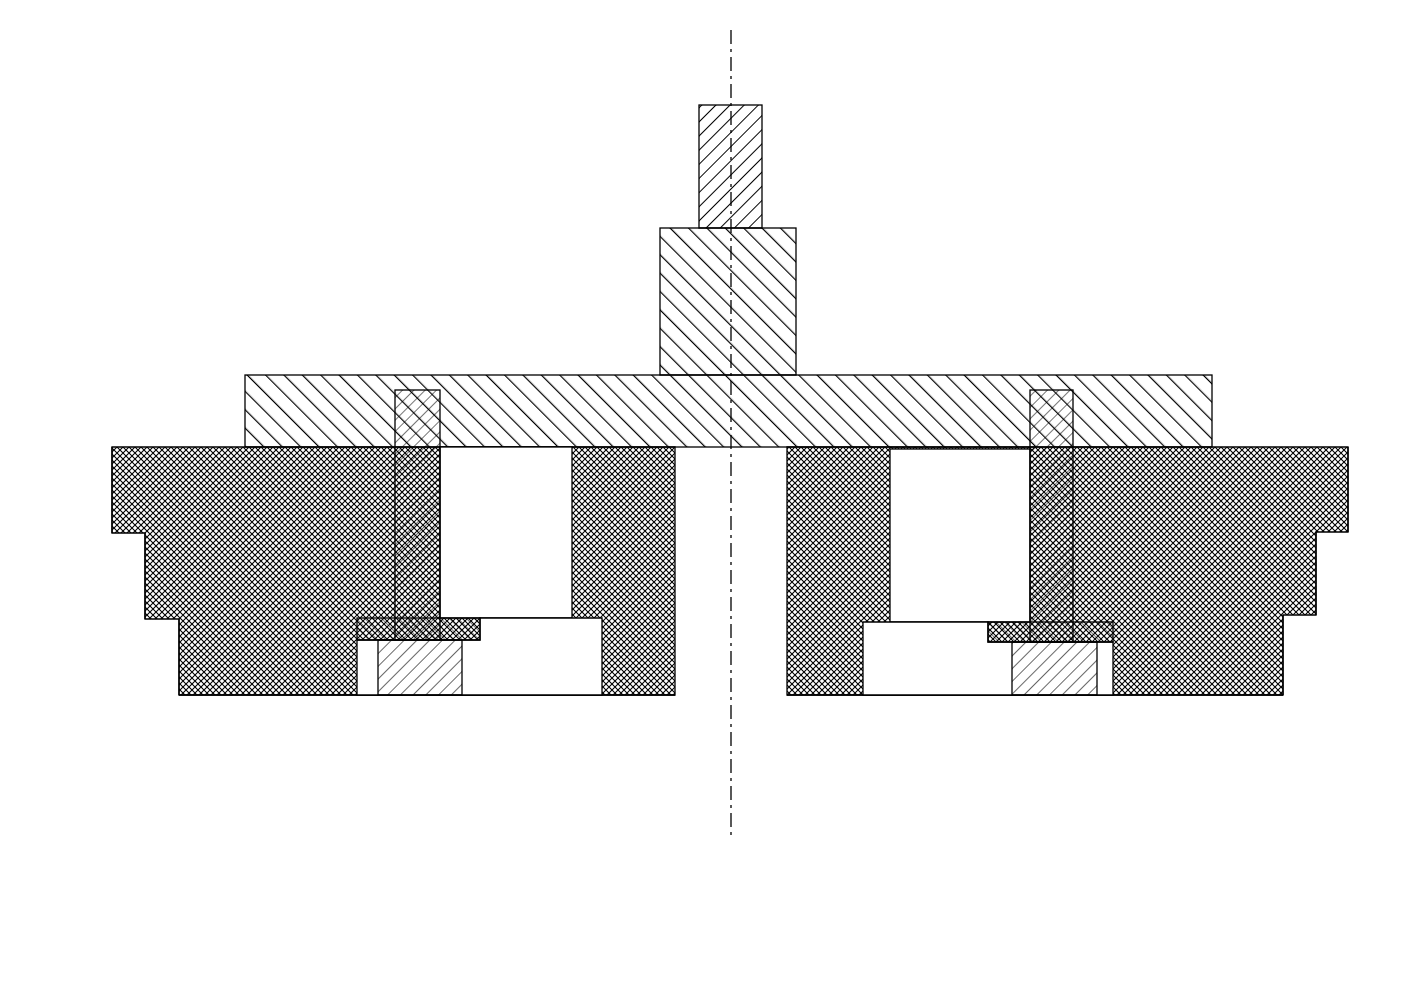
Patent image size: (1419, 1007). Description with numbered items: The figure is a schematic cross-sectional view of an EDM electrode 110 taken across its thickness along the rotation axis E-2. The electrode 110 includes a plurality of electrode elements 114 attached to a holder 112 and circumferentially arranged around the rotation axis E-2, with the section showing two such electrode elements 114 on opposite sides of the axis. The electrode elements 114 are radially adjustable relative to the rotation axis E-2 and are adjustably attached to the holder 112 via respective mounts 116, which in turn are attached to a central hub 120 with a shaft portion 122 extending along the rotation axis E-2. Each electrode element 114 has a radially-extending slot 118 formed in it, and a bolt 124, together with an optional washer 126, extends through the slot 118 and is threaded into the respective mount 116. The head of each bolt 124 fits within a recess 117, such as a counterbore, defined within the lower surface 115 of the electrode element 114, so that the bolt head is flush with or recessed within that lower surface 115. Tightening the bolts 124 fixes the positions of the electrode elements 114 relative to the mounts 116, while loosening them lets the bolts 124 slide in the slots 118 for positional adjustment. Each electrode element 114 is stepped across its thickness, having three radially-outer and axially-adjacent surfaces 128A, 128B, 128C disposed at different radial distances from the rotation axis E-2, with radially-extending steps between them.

The electrode 110 is at (253, 78).
The holder 112 is at (563, 278).
The electrode elements 114 is at (264, 571).
The lower surfaces 115 is at (297, 697).
The mounts 116 is at (363, 375).
The recesses 117 is at (540, 653).
The radially-extending slot 118 is at (524, 552).
The central hub 120 is at (775, 282).
The shaft 122 is at (757, 150).
The bolts 124 is at (438, 670).
The washers 126 is at (483, 630).
The radially-outer surface 128A is at (112, 490).
The radially-outer surface 128B is at (145, 575).
The radially-outer surface 128C is at (179, 652).
The rotation axis E-2 is at (735, 68).